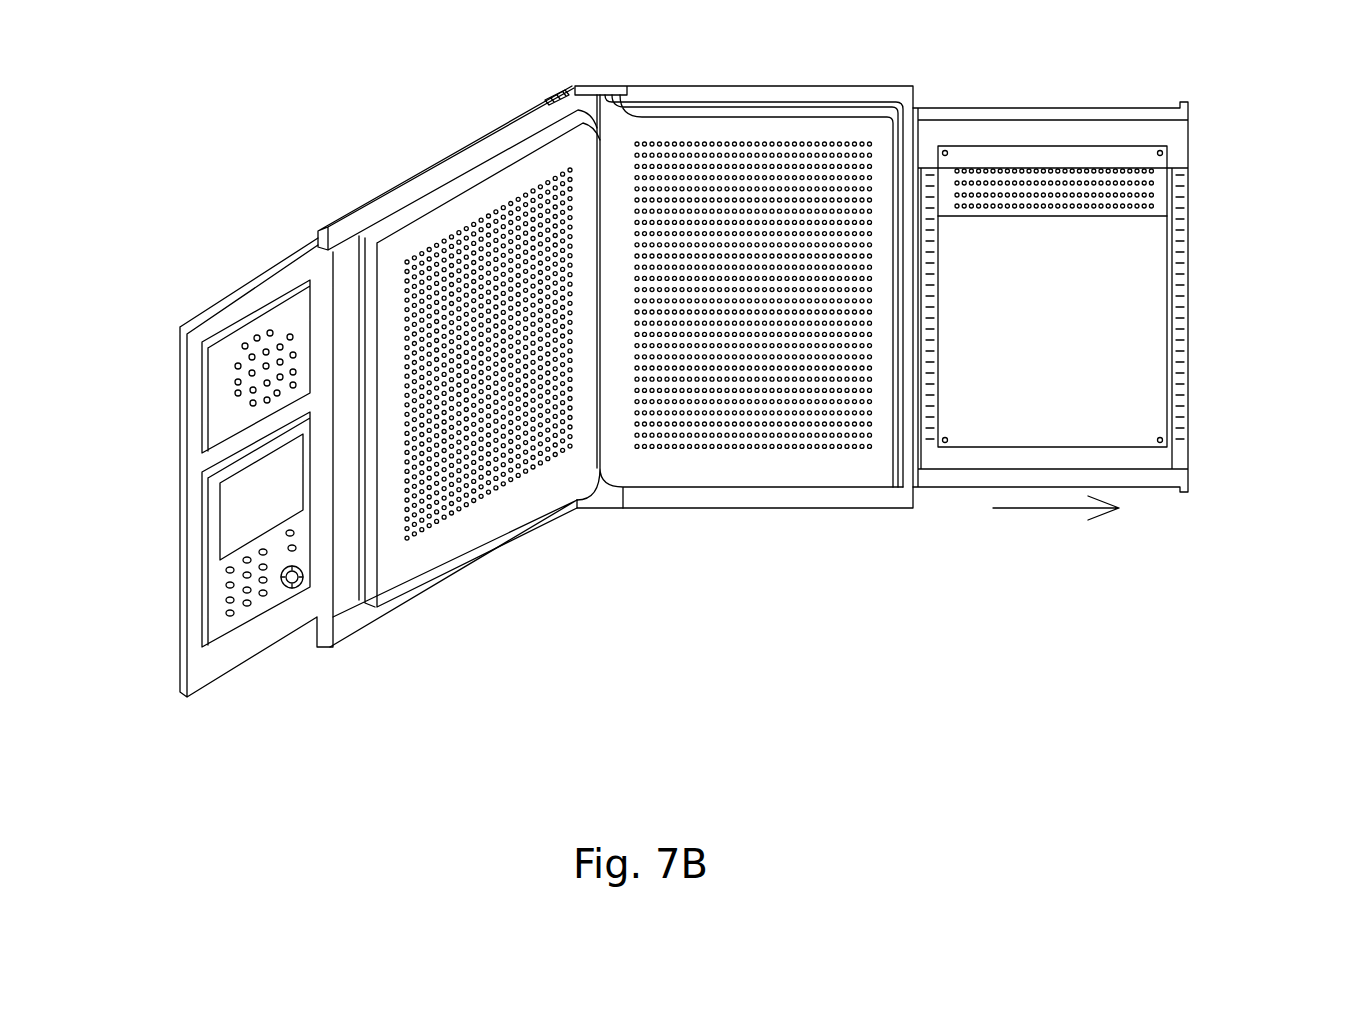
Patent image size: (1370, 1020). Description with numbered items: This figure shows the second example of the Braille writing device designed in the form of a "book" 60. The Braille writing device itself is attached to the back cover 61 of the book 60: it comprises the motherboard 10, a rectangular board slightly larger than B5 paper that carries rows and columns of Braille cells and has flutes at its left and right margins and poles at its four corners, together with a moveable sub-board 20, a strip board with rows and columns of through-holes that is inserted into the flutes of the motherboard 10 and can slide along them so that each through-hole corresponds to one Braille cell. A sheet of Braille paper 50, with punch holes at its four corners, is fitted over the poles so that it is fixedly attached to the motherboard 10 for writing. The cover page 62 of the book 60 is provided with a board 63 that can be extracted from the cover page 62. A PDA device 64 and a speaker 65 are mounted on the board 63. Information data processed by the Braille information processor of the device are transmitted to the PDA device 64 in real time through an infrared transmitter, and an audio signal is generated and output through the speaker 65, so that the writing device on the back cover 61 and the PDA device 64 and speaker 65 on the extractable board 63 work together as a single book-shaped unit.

The motherboard 10 is at (1222, 255).
The moveable sub-board 20 is at (1068, 231).
The Braille paper 50 is at (407, 242).
The book 60 is at (548, 567).
The back cover 61 is at (813, 88).
The cover page 62 is at (427, 173).
The board 63 is at (250, 283).
The PDA device 64 is at (230, 543).
The speaker 65 is at (220, 403).